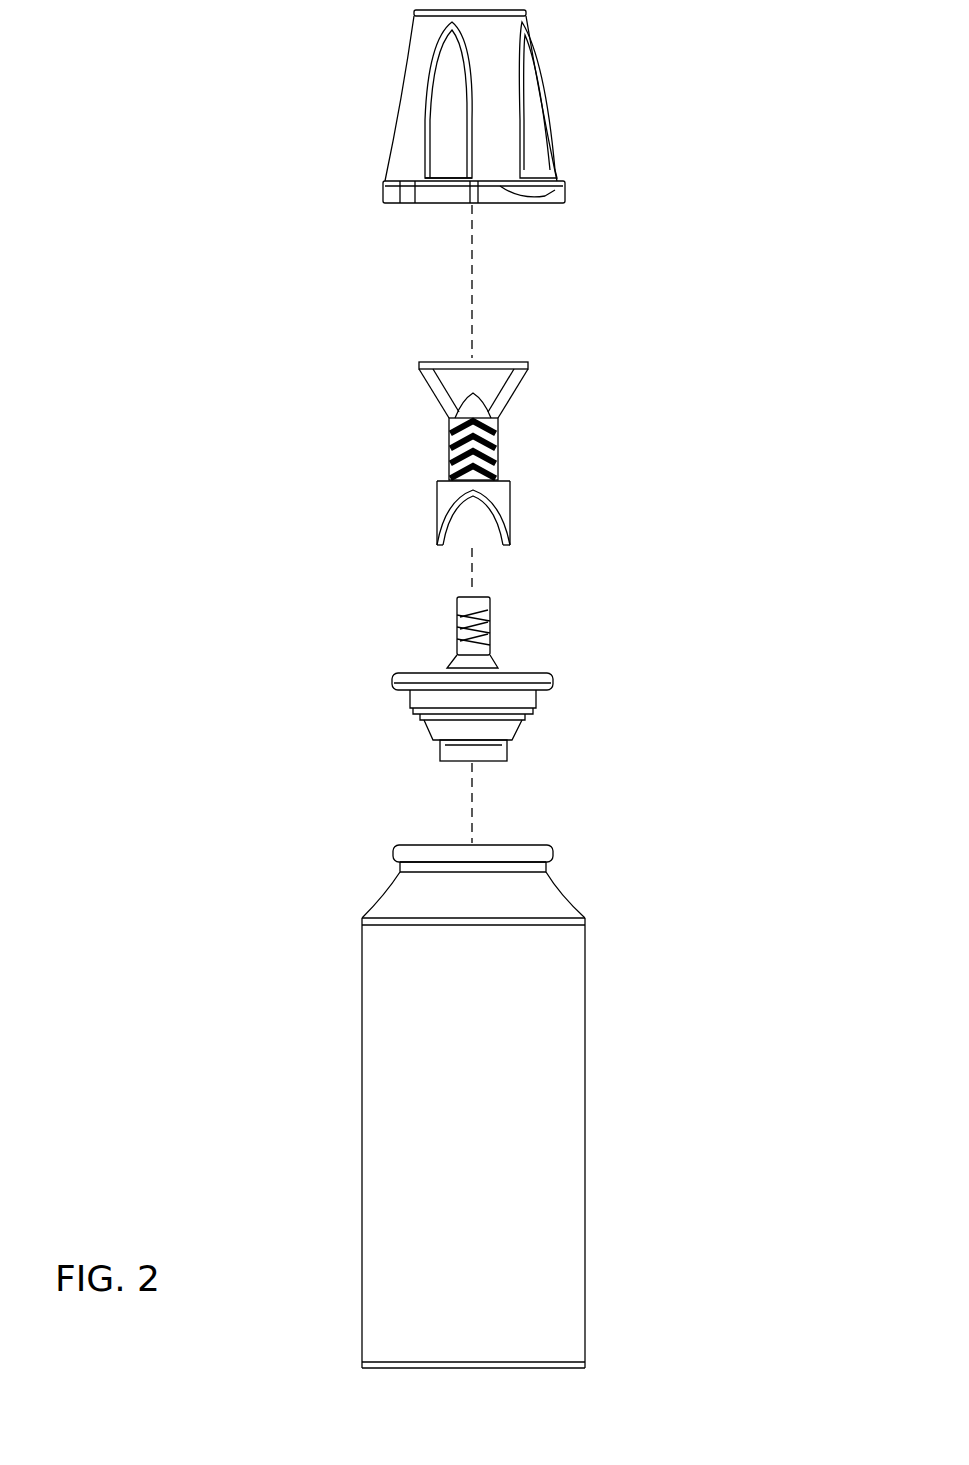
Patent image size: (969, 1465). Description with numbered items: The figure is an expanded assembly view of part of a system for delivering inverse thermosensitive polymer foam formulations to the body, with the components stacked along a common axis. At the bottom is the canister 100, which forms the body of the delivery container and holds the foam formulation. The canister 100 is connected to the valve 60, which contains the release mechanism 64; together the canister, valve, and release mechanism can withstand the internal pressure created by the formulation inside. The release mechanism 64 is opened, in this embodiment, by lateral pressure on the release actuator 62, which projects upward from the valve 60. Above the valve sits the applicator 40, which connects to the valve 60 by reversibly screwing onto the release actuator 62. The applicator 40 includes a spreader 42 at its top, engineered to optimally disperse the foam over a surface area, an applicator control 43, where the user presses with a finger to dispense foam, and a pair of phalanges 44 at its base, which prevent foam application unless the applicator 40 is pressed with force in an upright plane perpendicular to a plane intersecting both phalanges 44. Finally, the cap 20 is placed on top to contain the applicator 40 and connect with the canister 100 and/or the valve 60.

The cap 20 is at (392, 105).
The applicator 40 is at (432, 457).
The spreader 42 is at (548, 377).
The applicator control 43 is at (503, 449).
The phalanges 44 is at (530, 509).
The valve 60 is at (382, 685).
The release actuator 62 is at (503, 627).
The release mechanism 64 is at (530, 747).
The canister 100 is at (345, 1081).